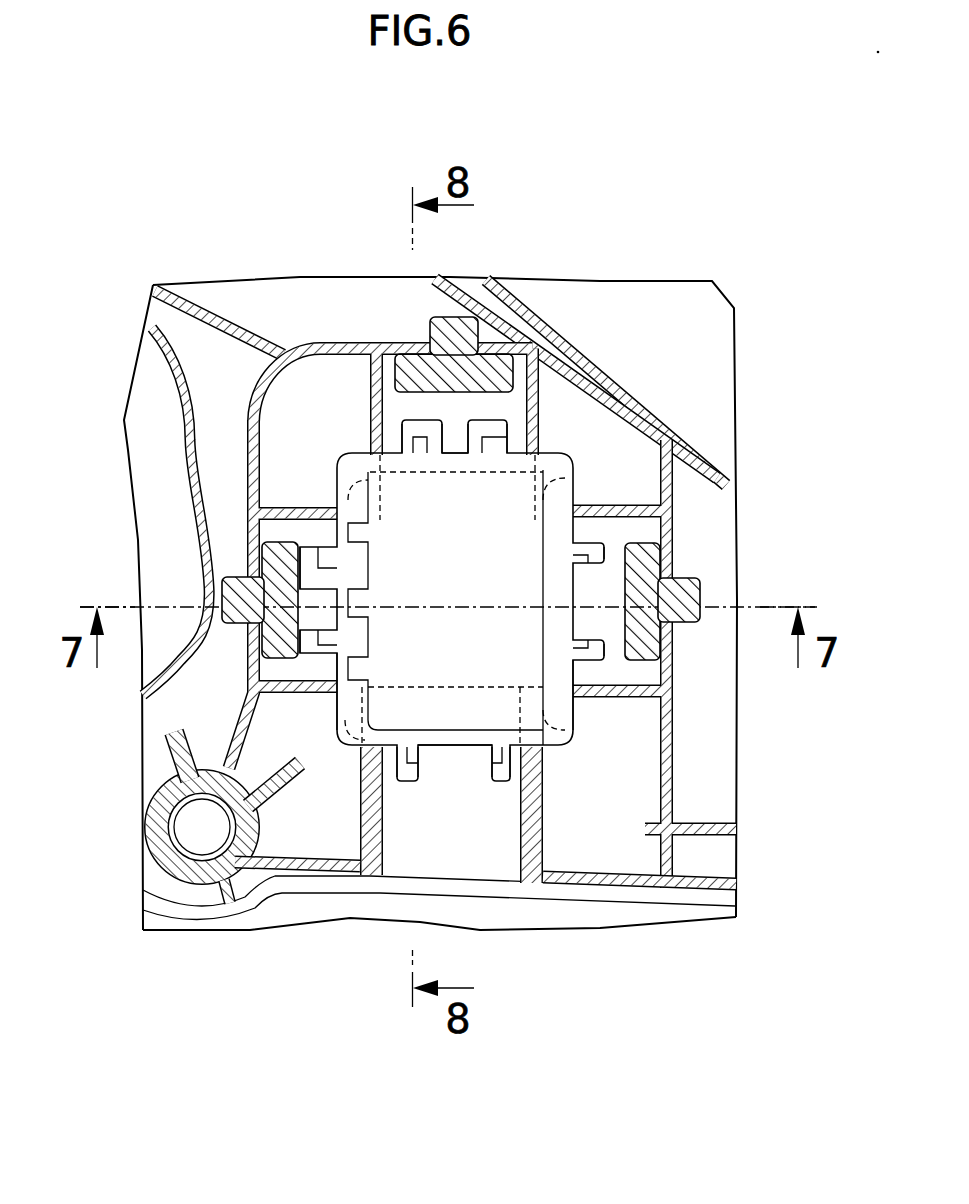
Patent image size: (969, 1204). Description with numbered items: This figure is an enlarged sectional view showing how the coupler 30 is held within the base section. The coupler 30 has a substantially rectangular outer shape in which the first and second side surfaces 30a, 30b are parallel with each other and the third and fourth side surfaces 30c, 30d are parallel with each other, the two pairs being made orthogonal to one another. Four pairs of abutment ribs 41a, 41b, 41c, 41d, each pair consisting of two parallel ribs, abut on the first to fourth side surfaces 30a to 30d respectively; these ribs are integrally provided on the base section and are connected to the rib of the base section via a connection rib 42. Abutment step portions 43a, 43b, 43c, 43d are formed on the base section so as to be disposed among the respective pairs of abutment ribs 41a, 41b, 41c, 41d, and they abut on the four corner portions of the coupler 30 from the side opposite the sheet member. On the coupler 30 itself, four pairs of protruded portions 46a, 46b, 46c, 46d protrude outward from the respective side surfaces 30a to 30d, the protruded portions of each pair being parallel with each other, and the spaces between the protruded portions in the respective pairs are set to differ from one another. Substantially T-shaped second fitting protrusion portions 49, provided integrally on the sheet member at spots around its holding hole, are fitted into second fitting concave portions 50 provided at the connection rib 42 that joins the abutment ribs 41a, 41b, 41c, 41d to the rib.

The coupler 30 is at (457, 590).
The first side surface 30a is at (455, 456).
The second side surface 30b is at (450, 750).
The third side surface 30c is at (332, 665).
The fourth side surface 30d is at (575, 668).
The abutment ribs 41a is at (372, 390).
The abutment ribs 41b is at (362, 838).
The abutment ribs 41c is at (297, 507).
The abutment ribs 41d is at (673, 488).
The connection rib 42 is at (318, 342).
The abutment step portion 43a is at (552, 482).
The abutment step portion 43b is at (556, 700).
The abutment step portion 43c is at (355, 737).
The abutment step portion 43d is at (385, 515).
The protruded portions 46a is at (420, 420).
The protruded portions 46b is at (408, 782).
The protruded portions 46c is at (303, 550).
The protruded portions 46d is at (600, 545).
The second fitting protrusion portion 49 is at (478, 320).
The second fitting concave portion 50 is at (427, 354).